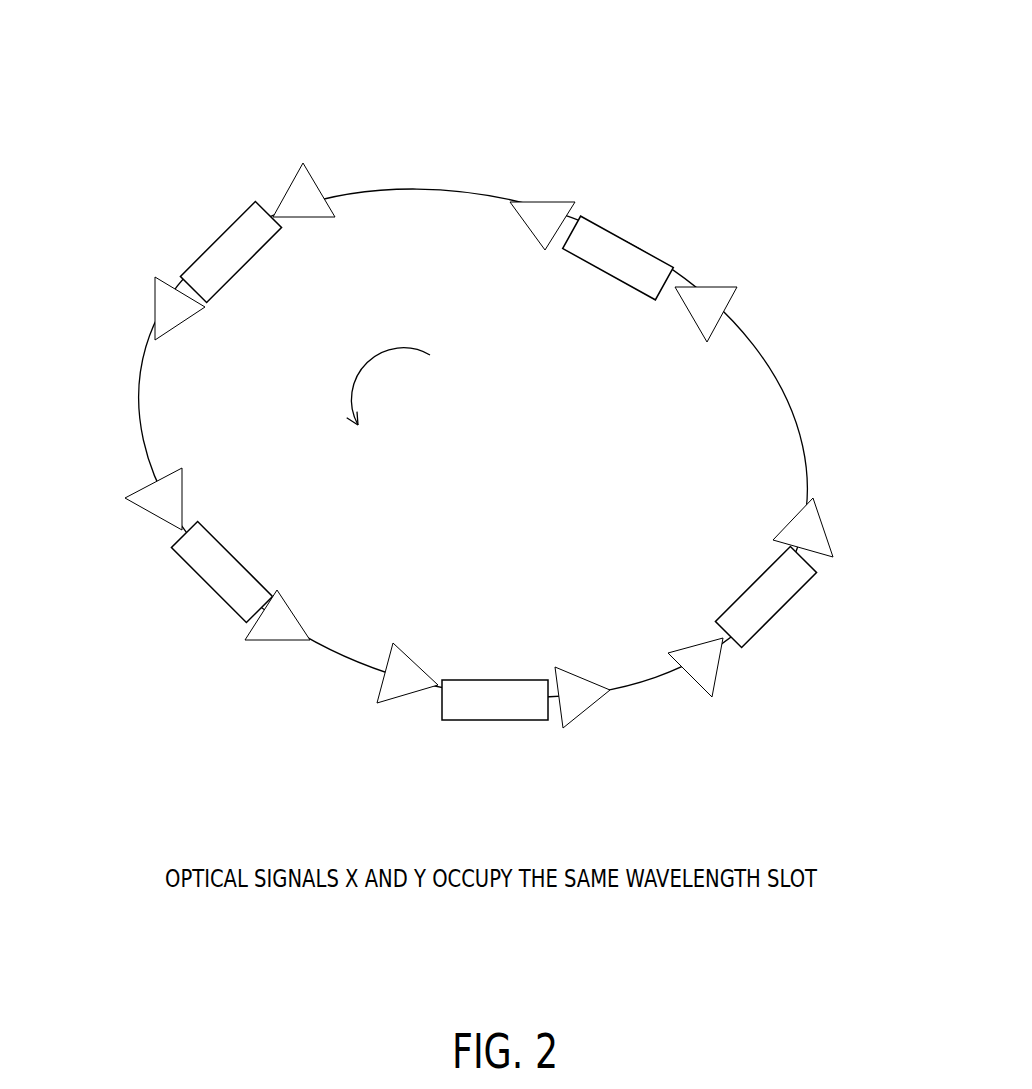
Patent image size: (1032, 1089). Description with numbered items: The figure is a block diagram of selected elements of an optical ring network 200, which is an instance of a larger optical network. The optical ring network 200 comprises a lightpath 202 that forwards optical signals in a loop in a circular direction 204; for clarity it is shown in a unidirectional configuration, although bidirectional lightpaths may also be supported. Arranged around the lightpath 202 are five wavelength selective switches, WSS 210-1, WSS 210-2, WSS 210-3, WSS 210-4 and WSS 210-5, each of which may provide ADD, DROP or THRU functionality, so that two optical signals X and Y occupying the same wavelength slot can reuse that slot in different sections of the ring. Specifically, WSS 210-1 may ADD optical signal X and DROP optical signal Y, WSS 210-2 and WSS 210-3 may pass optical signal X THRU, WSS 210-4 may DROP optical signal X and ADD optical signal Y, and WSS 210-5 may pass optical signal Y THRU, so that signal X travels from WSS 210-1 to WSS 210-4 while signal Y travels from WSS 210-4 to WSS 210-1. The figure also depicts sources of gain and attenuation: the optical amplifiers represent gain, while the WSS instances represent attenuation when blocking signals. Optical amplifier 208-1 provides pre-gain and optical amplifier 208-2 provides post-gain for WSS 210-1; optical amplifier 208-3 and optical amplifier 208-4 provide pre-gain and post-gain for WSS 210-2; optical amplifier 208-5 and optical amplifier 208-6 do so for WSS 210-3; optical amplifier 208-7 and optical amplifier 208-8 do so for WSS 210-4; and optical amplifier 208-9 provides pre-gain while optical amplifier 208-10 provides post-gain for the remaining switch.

The optical ring network 200 is at (118, 40).
The lightpath 202 is at (435, 190).
The circular direction 204 is at (404, 350).
The optical amplifier 208-1 is at (707, 344).
The optical amplifier 208-2 is at (545, 252).
The optical amplifier 208-3 is at (318, 219).
The optical amplifier 208-4 is at (190, 325).
The optical amplifier 208-5 is at (182, 466).
The optical amplifier 208-6 is at (290, 602).
The optical amplifier 208-7 is at (412, 657).
The optical amplifier 208-8 is at (576, 678).
The optical amplifier 208-9 is at (680, 650).
The optical amplifier 208-10 is at (790, 528).
The WSS 210-1 is at (622, 288).
The WSS 210-2 is at (257, 264).
The WSS 210-3 is at (244, 558).
The WSS 210-4 is at (493, 679).
The WSS 210-5 is at (736, 602).